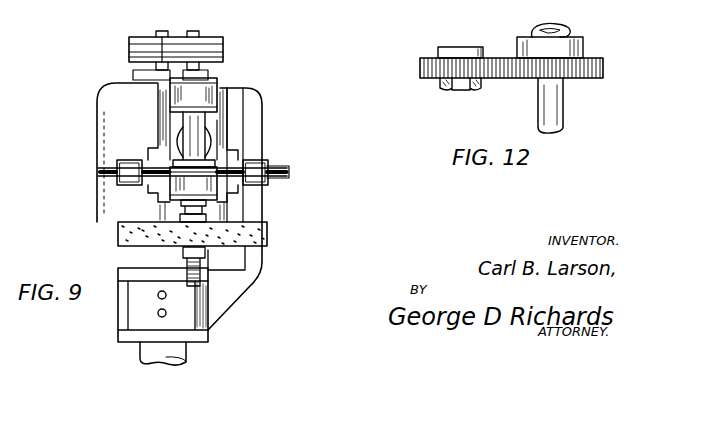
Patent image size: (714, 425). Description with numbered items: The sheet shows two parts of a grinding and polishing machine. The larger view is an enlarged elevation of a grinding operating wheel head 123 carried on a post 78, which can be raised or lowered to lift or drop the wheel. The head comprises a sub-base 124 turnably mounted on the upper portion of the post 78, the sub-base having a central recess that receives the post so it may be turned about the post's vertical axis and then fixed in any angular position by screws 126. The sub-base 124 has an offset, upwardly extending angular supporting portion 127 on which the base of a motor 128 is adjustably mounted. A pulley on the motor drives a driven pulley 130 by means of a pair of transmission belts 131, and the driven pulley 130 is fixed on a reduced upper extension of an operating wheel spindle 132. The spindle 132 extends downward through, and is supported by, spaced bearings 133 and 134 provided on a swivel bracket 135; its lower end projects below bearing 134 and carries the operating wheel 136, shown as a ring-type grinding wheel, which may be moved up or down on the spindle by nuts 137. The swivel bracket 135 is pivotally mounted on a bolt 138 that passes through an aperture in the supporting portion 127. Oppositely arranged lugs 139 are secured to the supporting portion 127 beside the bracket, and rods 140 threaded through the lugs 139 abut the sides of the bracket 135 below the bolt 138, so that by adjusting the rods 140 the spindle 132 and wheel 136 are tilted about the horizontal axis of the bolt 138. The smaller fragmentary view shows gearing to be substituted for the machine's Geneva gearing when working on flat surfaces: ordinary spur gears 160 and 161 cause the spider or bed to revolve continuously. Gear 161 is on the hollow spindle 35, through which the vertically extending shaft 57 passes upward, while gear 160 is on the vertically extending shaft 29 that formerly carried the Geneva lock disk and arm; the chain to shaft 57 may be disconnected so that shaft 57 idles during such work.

In FIG. 9, the grinding operating wheel head 123 is at (72, 117).
In FIG. 9, the sub-base 124 is at (118, 322).
In FIG. 9, the screws 126 is at (157, 313).
In FIG. 9, the angular supporting portion 127 is at (228, 112).
In FIG. 9, the motor 128 is at (97, 150).
In FIG. 9, the driven pulley 130 is at (216, 37).
In FIG. 9, the transmission belts 131 is at (166, 48).
In FIG. 9, the operating wheel spindle 132 is at (206, 128).
In FIG. 9, the bearing 133 is at (216, 90).
In FIG. 9, the bearing 134 is at (218, 188).
In FIG. 9, the swivel bracket 135 is at (220, 137).
In FIG. 9, the operating wheel 136 is at (267, 232).
In FIG. 9, the nuts 137 is at (120, 238).
In FIG. 9, the bolt 138 is at (170, 136).
In FIG. 9, the lugs 139 is at (258, 162).
In FIG. 9, the rods 140 is at (289, 173).
In FIG. 9, the post 78 is at (140, 358).
In FIG. 12, the spur gear 160 is at (420, 68).
In FIG. 12, the spur gear 161 is at (603, 68).
In FIG. 12, the hollow spindle 35 is at (570, 28).
In FIG. 12, the vertically extending shaft 57 is at (561, 94).
In FIG. 12, the vertically extending shaft 29 is at (458, 90).